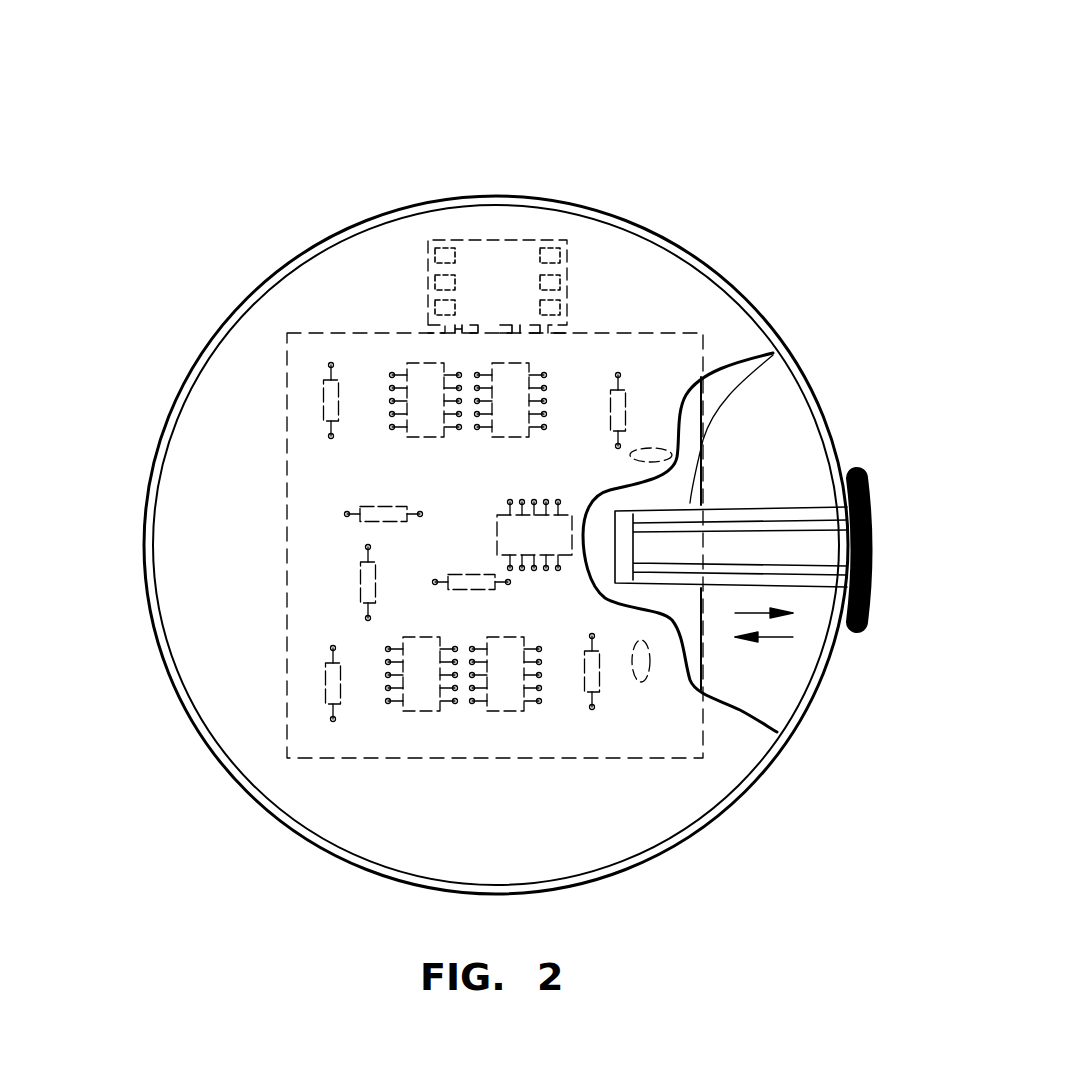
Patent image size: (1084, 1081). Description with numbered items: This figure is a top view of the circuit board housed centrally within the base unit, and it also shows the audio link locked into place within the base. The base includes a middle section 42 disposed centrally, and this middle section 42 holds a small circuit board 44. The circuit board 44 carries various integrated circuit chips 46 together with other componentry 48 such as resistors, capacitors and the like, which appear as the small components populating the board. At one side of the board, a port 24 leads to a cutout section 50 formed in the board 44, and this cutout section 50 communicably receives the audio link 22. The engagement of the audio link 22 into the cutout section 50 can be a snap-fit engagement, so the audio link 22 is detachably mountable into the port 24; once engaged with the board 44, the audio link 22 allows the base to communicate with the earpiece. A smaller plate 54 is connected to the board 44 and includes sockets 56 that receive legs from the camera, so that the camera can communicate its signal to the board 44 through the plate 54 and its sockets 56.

The audio link 22 is at (873, 555).
The port 24 is at (827, 507).
The middle section 42 is at (687, 201).
The circuit board 44 is at (297, 372).
The integrated circuit chips 46 is at (417, 377).
The componentry 48 is at (370, 577).
The cutout section 50 is at (770, 355).
The plate 54 is at (507, 240).
The sockets 56 is at (432, 252).